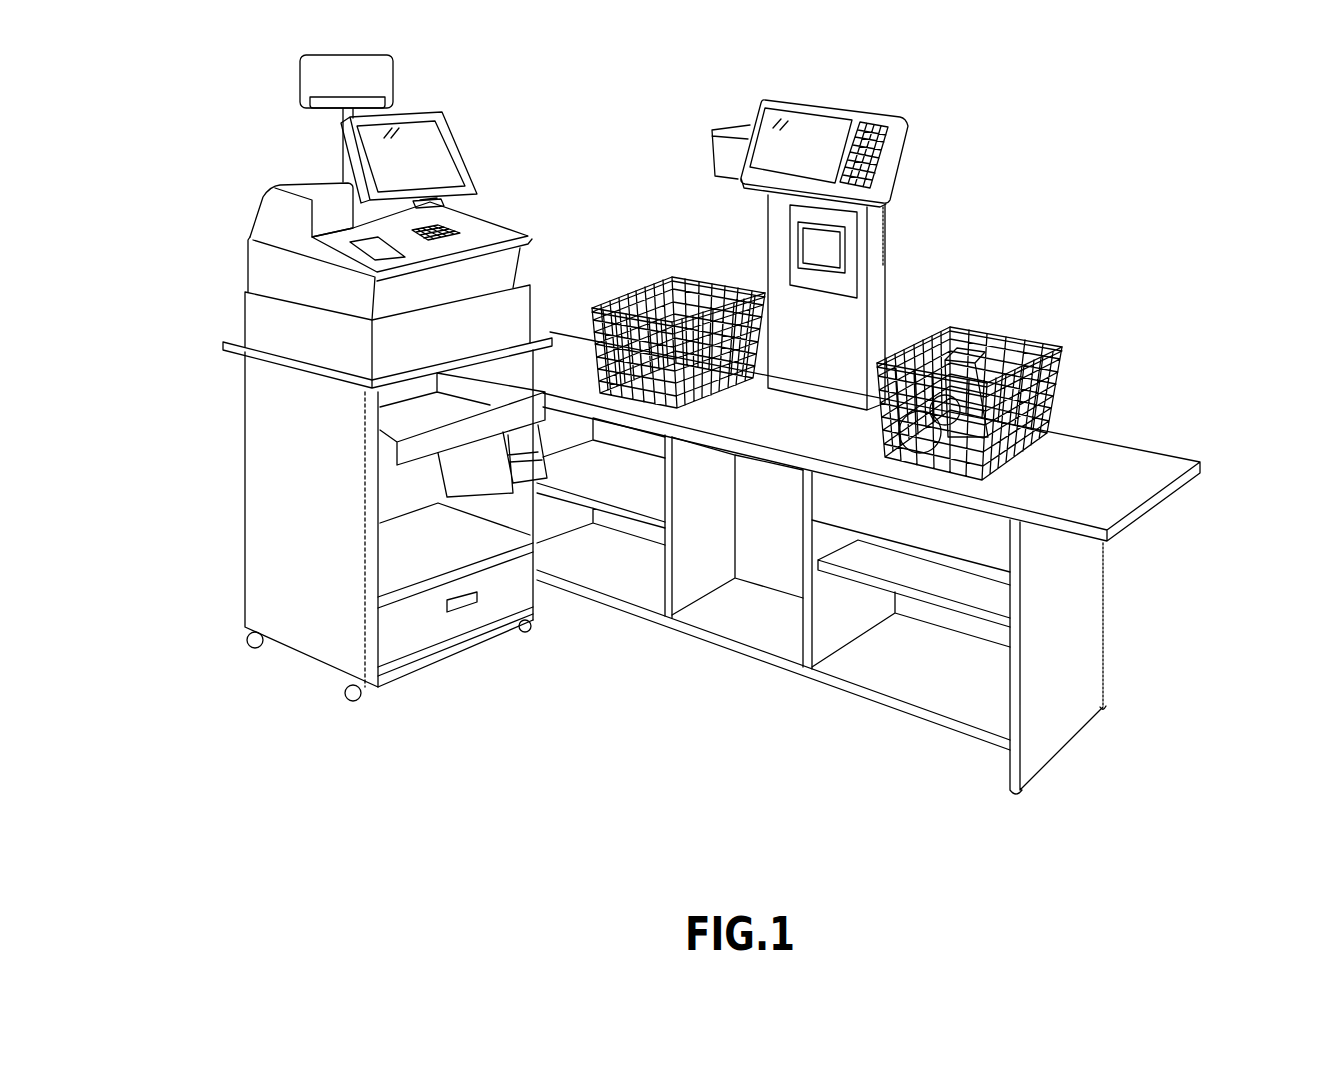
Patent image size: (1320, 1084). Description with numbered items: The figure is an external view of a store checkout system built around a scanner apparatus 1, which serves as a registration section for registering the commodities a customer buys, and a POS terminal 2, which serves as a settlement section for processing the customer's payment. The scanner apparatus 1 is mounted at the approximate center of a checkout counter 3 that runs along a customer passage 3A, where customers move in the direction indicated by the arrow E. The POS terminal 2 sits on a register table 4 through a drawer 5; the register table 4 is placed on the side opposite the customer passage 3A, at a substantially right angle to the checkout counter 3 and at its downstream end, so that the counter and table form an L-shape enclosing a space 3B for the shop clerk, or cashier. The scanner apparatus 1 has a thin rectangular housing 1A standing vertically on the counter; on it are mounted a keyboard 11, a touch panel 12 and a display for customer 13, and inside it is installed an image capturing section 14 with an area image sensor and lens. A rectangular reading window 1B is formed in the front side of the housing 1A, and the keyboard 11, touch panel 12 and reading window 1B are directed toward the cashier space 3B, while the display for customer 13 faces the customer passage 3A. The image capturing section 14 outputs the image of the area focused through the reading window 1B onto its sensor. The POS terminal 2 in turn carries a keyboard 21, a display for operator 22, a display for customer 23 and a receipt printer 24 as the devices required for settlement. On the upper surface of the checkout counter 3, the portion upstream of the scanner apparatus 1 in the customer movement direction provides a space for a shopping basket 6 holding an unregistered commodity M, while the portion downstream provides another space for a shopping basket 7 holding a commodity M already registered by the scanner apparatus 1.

The scanner apparatus 1 is at (808, 233).
The housing 1A is at (875, 288).
The reading window 1B is at (800, 248).
The POS terminal 2 is at (391, 187).
The checkout counter 3 is at (868, 571).
The customer passage 3A is at (1140, 672).
The space for a shop clerk 3B is at (673, 748).
The register table 4 is at (245, 482).
The drawer 5 is at (245, 311).
The shopping basket 6 is at (978, 385).
The shopping basket 7 is at (637, 290).
The keyboard 11 is at (887, 122).
The touch panel 12 is at (813, 120).
The display for customer 13 is at (710, 138).
The image capturing section 14 is at (835, 247).
The keyboard 21 is at (488, 226).
The display for operator 22 is at (458, 137).
The display for customer 23 is at (395, 72).
The receipt printer 24 is at (293, 187).
The commodity M is at (975, 350).
The arrow E is at (1132, 625).